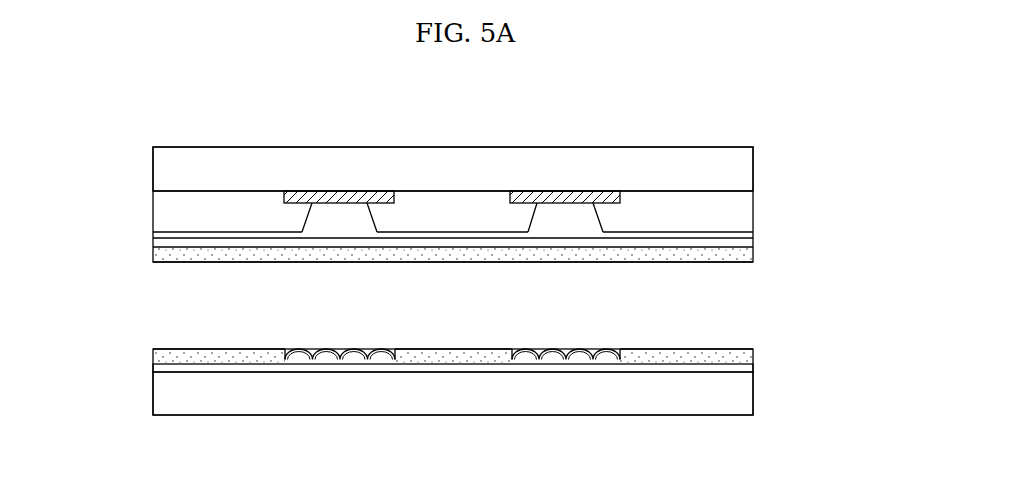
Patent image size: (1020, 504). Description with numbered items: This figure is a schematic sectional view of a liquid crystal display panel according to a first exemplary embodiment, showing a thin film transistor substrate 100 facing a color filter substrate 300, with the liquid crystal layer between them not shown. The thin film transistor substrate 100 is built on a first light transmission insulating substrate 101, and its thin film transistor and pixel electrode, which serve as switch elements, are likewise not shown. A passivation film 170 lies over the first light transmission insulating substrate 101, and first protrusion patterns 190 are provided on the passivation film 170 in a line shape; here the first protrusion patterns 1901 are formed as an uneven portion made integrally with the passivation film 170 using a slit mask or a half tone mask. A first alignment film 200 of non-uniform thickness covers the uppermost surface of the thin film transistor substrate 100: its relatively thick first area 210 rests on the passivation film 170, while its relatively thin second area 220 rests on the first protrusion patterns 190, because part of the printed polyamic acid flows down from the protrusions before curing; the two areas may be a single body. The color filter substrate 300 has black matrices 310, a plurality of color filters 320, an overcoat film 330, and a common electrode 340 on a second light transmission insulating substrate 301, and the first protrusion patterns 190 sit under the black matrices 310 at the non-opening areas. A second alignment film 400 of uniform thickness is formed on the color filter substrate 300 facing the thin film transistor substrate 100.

The thin film transistor substrate 100 is at (146, 392).
The first light transmission insulating substrate 101 is at (750, 397).
The passivation film 170 is at (750, 369).
The first protrusion patterns 190 is at (557, 362).
The first protrusion patterns 1901 is at (355, 352).
The first alignment film 200 is at (828, 311).
The first area 210 is at (753, 348).
The second area 220 is at (598, 349).
The color filter substrate 300 is at (770, 210).
The second light transmission insulating substrate 301 is at (750, 162).
The black matrices 310 is at (337, 195).
The color filters 320 is at (198, 198).
The overcoat film 330 is at (153, 233).
The common electrode 340 is at (153, 244).
The second alignment film 400 is at (750, 253).